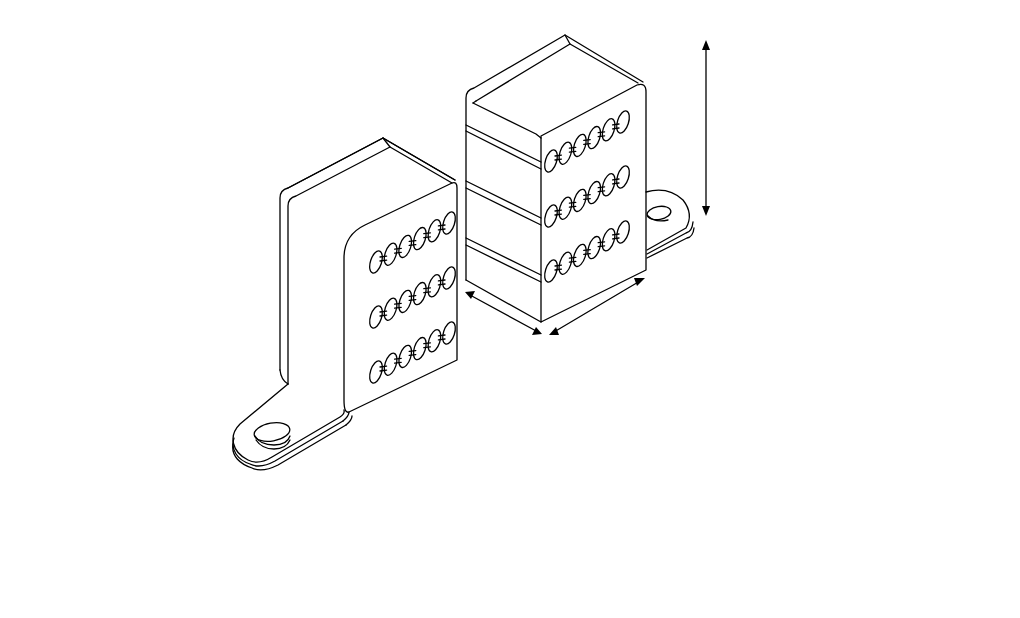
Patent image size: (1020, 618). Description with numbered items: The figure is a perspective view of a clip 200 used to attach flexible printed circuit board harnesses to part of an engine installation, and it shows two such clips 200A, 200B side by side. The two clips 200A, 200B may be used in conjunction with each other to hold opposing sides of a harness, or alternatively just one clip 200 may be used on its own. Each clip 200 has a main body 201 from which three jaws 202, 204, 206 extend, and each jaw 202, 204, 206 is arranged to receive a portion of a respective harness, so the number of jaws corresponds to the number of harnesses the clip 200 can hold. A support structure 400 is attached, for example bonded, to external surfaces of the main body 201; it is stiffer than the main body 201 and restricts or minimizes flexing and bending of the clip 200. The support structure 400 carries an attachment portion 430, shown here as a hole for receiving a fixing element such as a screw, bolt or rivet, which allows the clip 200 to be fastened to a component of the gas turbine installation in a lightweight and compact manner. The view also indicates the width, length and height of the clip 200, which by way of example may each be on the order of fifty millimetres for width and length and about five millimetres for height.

The clip 200 is at (299, 128).
The clip 200A is at (468, 430).
The clip 200B is at (645, 325).
The main body 201 is at (362, 297).
The jaw 202 is at (372, 266).
The jaw 204 is at (374, 315).
The jaw 206 is at (374, 375).
The support structure 400 is at (343, 191).
The attachment portion 430 is at (272, 441).